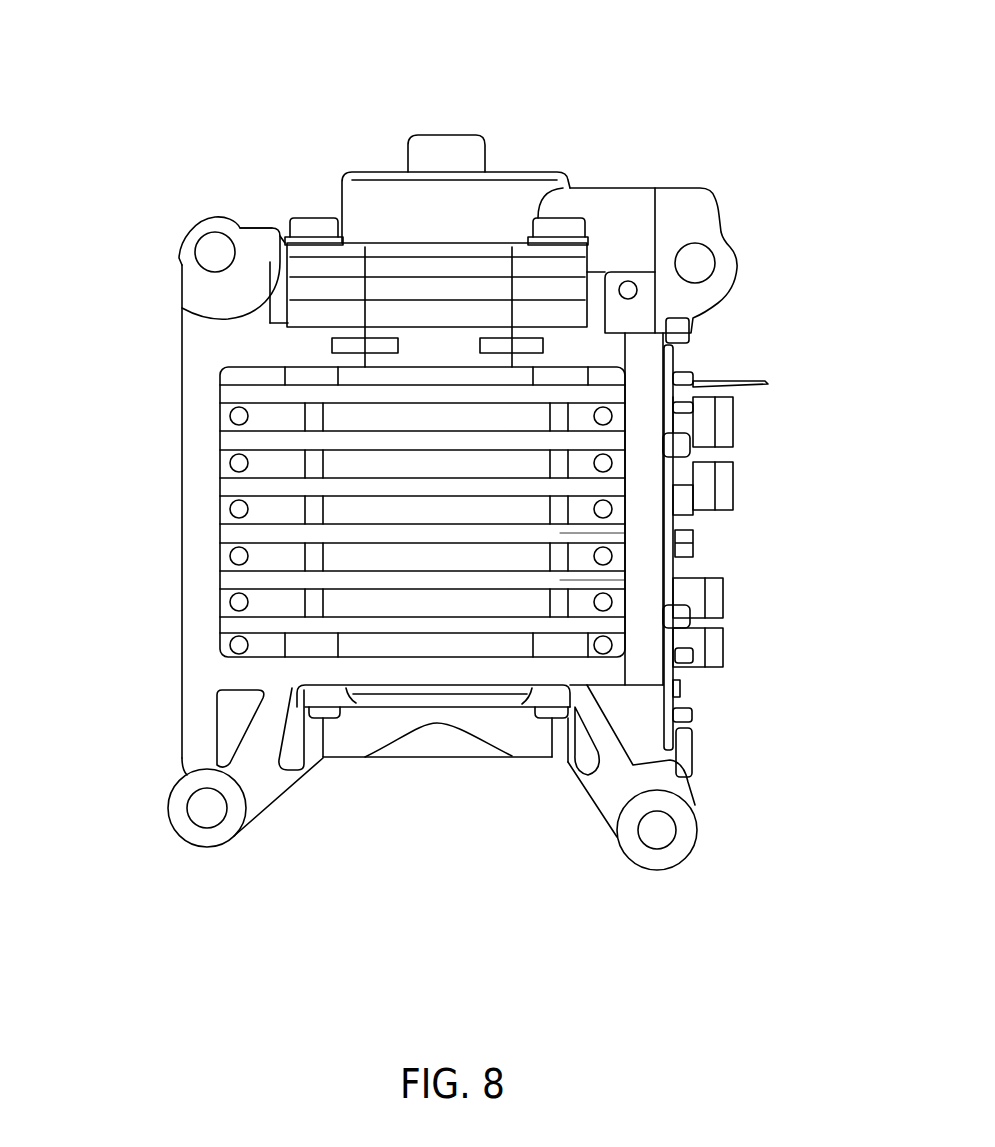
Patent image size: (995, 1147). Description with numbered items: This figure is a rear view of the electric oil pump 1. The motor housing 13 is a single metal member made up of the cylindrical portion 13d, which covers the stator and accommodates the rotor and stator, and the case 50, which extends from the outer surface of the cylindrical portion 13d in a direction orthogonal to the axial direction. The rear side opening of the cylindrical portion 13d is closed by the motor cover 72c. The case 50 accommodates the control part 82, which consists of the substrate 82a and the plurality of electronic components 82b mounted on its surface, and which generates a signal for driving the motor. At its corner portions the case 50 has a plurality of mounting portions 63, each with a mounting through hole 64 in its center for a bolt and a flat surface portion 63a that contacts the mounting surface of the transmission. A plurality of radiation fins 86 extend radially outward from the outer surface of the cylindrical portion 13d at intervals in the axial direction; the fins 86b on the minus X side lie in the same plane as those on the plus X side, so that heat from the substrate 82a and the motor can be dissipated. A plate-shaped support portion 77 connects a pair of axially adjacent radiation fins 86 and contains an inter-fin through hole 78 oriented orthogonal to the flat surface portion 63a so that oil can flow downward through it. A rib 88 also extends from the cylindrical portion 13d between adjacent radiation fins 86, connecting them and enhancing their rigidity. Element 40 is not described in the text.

The electric oil pump 1 is at (743, 97).
The motor housing 13 is at (155, 442).
The cylindrical portion 13d is at (342, 602).
The capacitor 40 is at (524, 148).
The case 50 is at (195, 512).
The mounting portion 63 is at (197, 216).
The flat surface portion 63a is at (232, 230).
The mounting through hole 64 is at (211, 238).
The motor cover 72c is at (437, 748).
The support portion 77 is at (268, 555).
The inter-fin through hole 78 is at (240, 460).
The control part 82 is at (745, 530).
The substrate 82a is at (676, 357).
The electronic components 82b is at (733, 435).
The radiation fins 86 is at (617, 533).
The radiation fins on the −X side 86b is at (620, 578).
The rib 88 is at (313, 417).